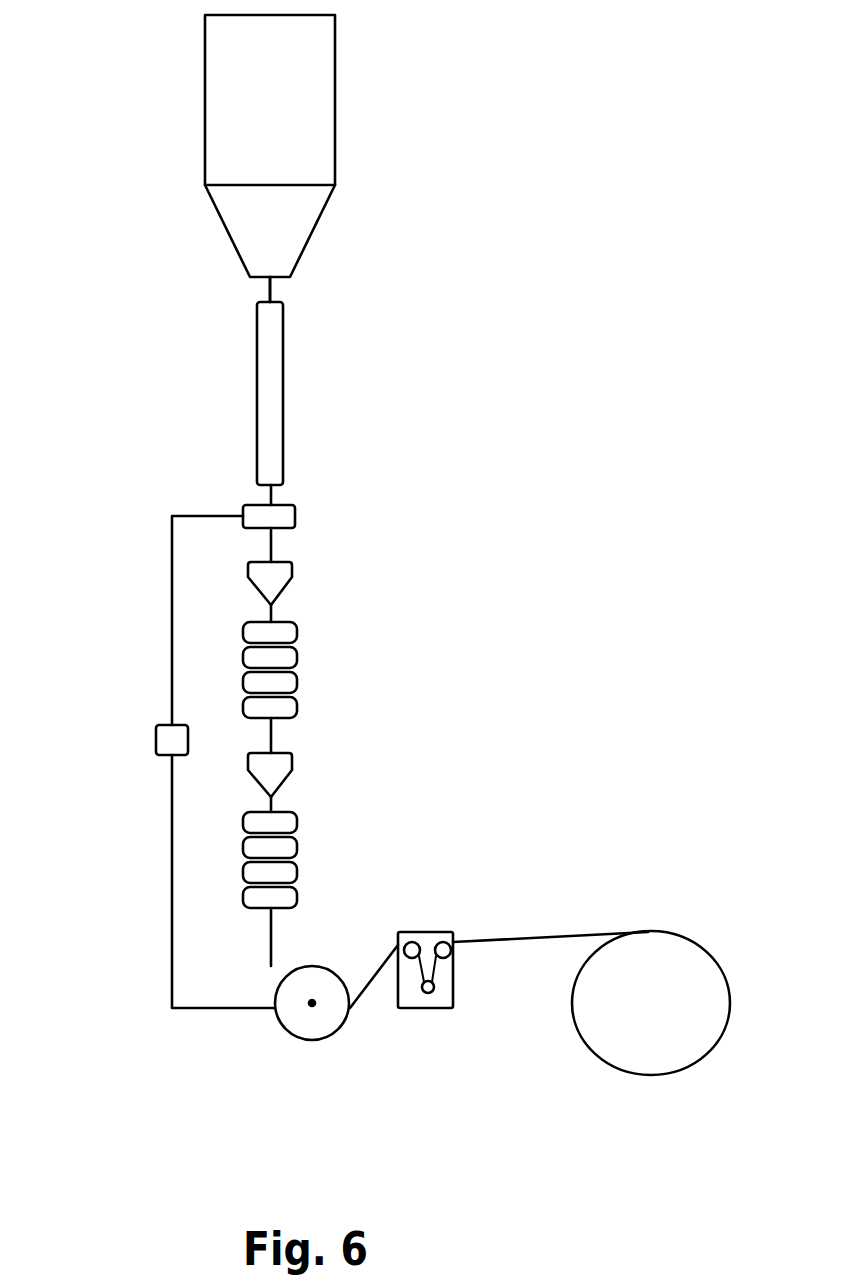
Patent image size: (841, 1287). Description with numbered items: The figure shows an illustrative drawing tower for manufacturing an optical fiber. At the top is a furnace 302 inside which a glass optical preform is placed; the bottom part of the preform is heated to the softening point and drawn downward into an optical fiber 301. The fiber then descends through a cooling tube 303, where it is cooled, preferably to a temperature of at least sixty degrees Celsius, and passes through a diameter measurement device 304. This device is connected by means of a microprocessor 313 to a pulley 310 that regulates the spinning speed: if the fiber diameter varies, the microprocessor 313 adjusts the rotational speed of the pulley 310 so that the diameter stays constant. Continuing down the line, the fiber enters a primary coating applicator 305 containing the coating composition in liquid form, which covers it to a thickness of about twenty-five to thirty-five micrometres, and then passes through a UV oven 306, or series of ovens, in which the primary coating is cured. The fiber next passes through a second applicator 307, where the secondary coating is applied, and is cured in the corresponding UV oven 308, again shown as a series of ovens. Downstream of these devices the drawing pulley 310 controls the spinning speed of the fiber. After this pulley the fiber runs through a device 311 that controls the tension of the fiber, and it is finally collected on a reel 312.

The optical fiber 301 is at (268, 290).
The furnace 302 is at (318, 155).
The cooling tube 303 is at (272, 410).
The diameter measurement device 304 is at (283, 517).
The primary coating applicator 305 is at (275, 578).
The UV oven 306 is at (285, 630).
The second applicator 307 is at (282, 770).
The UV oven 308 is at (288, 824).
The pulley 310 is at (290, 1015).
The tension control device 311 is at (430, 942).
The reel 312 is at (657, 960).
The microprocessor 313 is at (168, 742).